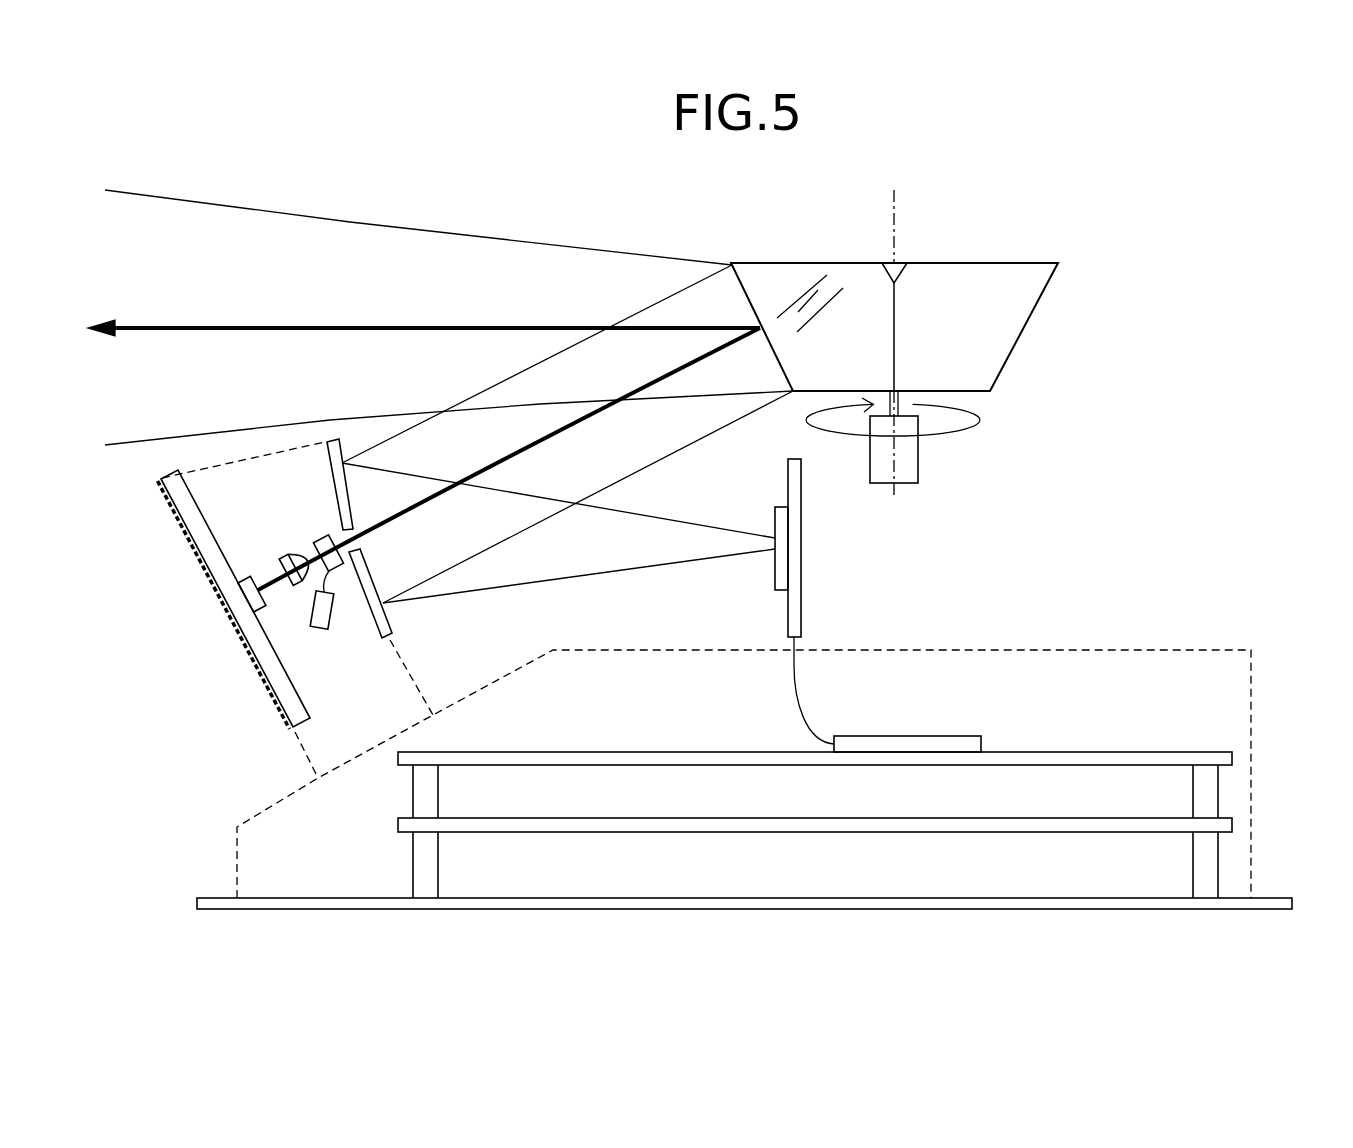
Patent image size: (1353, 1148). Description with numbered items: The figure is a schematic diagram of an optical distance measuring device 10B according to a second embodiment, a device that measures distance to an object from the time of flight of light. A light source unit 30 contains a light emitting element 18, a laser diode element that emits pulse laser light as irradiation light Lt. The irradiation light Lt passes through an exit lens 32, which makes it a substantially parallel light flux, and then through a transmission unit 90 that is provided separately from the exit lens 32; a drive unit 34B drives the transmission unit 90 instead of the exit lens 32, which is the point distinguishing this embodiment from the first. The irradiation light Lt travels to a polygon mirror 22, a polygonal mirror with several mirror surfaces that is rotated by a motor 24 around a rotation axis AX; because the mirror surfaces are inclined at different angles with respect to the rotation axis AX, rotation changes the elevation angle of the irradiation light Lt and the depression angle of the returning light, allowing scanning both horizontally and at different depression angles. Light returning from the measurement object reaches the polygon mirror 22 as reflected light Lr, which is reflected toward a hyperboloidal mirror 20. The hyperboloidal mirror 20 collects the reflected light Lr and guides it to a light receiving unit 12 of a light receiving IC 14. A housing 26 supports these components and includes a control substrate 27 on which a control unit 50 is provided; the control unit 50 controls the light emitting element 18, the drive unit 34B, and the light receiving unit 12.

The optical distance measuring device 10B is at (1235, 207).
The polygon mirror 22 is at (1027, 332).
The rotation axis AX is at (894, 325).
The motor 24 is at (918, 463).
The light receiving IC 14 is at (801, 553).
The light receiving unit 12 is at (773, 548).
The reflected light Lr is at (610, 572).
The irradiation light Lt is at (273, 577).
The hyperboloidal mirror 20 is at (329, 438).
The light source unit 30 is at (180, 657).
The light emitting element 18 is at (240, 580).
The exit lens 32 is at (293, 587).
The transmission unit 90 is at (322, 534).
The drive unit 34B is at (331, 627).
The housing 26 is at (1156, 649).
The control substrate 27 is at (1136, 752).
The control unit 50 is at (967, 734).